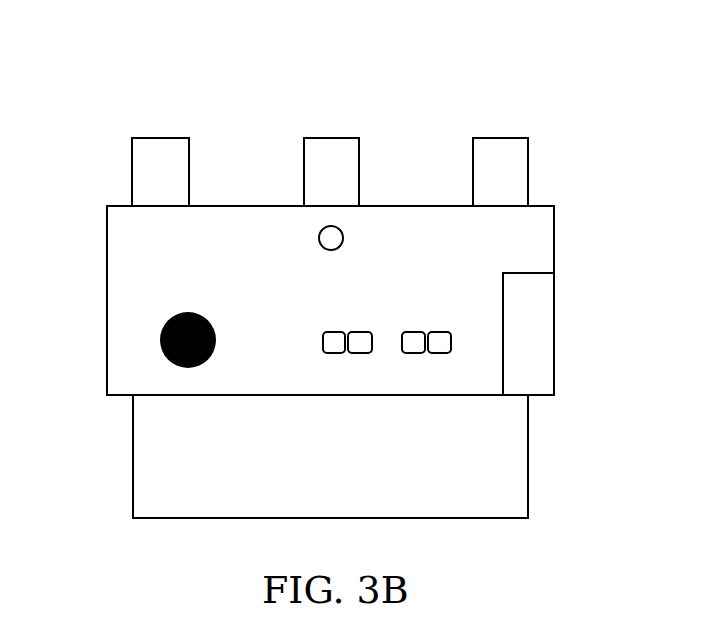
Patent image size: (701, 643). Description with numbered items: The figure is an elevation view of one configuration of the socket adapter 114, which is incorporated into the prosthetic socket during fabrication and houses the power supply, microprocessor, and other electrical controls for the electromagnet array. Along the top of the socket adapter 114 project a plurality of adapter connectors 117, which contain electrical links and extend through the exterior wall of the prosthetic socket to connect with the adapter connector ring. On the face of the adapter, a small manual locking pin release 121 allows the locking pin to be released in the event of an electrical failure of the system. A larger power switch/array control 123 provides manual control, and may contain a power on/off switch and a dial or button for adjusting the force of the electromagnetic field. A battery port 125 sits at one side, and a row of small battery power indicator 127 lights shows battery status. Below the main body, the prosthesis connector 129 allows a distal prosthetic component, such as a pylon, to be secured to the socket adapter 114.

The socket adapter 114 is at (184, 75).
The adapter connector 117 is at (508, 138).
The manual locking pin release 121 is at (344, 236).
The power switch/array control 123 is at (162, 328).
The battery port 125 is at (545, 307).
The battery power indicator 127 is at (440, 353).
The prosthesis connector 129 is at (528, 479).